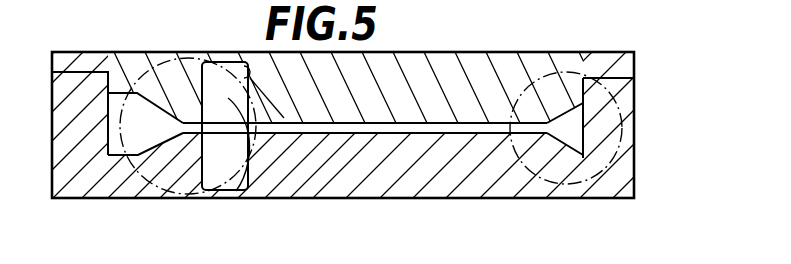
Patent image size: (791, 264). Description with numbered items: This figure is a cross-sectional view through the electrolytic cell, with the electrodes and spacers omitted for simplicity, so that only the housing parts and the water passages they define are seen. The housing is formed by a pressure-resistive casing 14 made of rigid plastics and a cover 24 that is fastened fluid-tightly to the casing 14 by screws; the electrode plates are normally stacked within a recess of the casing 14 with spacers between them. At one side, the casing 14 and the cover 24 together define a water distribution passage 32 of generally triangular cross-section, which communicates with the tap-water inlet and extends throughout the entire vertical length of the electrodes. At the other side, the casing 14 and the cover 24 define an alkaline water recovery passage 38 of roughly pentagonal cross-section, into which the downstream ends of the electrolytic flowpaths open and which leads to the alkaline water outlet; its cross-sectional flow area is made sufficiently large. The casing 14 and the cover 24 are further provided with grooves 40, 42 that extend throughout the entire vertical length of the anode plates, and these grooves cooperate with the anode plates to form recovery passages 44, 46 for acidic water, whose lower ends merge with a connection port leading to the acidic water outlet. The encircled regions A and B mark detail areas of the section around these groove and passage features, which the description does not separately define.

The pressure-resistive casing 14 is at (368, 187).
The cover 24 is at (442, 87).
The water distribution passage 32 is at (570, 126).
The alkaline water recovery passage 38 is at (140, 147).
The groove 40 is at (236, 191).
The groove 42 is at (249, 64).
The recovery passage for acidic water 44 is at (215, 168).
The recovery passage for acidic water 46 is at (249, 140).
The detail region A is at (153, 190).
The detail region B is at (568, 186).